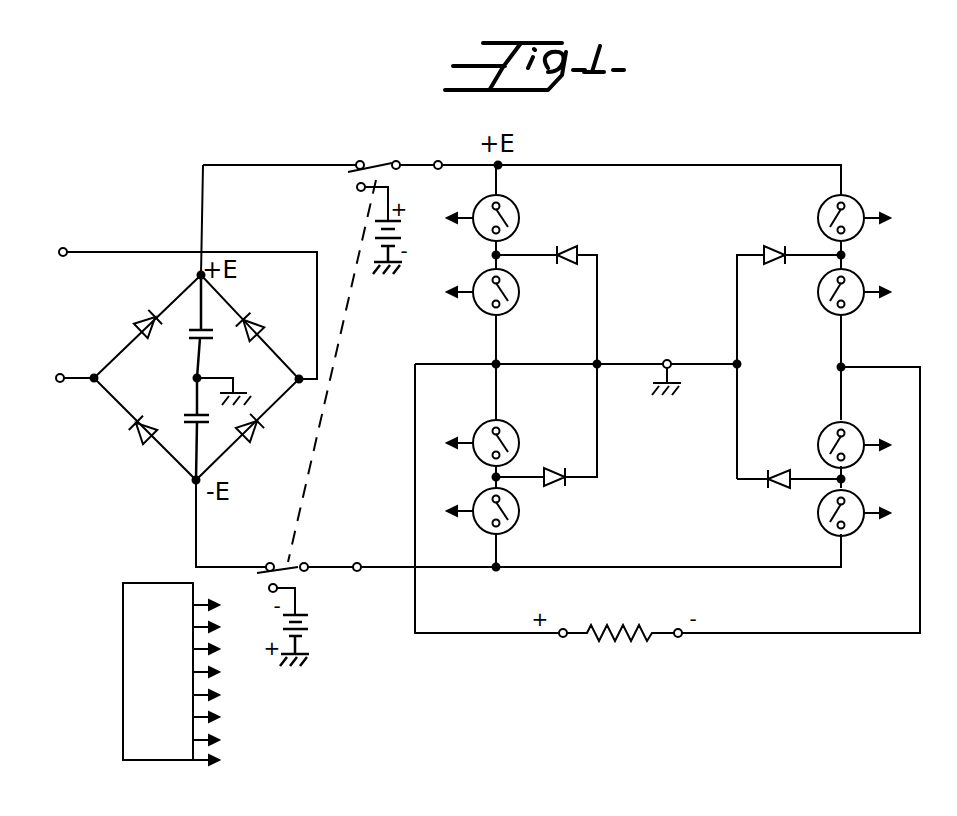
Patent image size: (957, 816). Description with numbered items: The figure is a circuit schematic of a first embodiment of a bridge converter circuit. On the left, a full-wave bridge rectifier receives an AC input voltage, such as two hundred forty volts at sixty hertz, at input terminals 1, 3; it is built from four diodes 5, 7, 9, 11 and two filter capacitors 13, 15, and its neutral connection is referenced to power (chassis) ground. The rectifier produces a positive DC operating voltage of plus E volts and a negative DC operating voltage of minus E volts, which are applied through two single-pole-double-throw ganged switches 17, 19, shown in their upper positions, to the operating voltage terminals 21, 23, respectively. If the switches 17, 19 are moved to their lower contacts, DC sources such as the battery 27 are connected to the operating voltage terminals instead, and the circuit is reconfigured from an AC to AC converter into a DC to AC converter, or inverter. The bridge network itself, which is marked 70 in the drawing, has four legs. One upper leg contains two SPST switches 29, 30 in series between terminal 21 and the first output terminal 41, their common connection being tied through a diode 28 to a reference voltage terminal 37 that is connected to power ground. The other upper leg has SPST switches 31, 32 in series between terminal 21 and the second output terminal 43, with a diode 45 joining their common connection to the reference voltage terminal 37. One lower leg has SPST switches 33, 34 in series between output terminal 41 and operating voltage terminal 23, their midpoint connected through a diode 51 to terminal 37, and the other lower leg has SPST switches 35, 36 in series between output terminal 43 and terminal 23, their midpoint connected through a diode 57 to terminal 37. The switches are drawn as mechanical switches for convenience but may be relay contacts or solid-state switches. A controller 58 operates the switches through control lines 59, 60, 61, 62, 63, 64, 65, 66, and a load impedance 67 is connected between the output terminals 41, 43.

The input terminal 1 is at (63, 247).
The input terminal 3 is at (57, 384).
The diode 5 is at (148, 315).
The diode 7 is at (245, 318).
The diode 9 is at (137, 427).
The diode 11 is at (263, 438).
The filter capacitor 13 is at (187, 342).
The filter capacitor 15 is at (187, 413).
The single-pole-double-throw ganged switch 17 is at (372, 158).
The single-pole-double-throw ganged switch 19 is at (296, 572).
The operating voltage terminal 21 is at (439, 155).
The operating voltage terminal 23 is at (357, 558).
The battery 27 is at (308, 636).
The diode 28 is at (559, 244).
The single-pole-single-throw switch 29 is at (521, 205).
The single-pole-single-throw switch 30 is at (520, 292).
The single-pole-single-throw switch 31 is at (864, 199).
The single-pole-single-throw switch 32 is at (865, 277).
The single-pole-single-throw switch 33 is at (506, 421).
The single-pole-single-throw switch 34 is at (514, 522).
The single-pole-single-throw switch 35 is at (856, 423).
The single-pole-single-throw switch 36 is at (813, 520).
The reference voltage terminal 37 is at (672, 359).
The output terminal 41 is at (561, 641).
The output terminal 43 is at (679, 641).
The diode 45 is at (790, 246).
The diode 51 is at (567, 480).
The diode 57 is at (766, 470).
The controller 58 is at (123, 666).
The control line 59 is at (333, 412).
The control line 60 is at (333, 460).
The control line 61 is at (559, 434).
The control line 62 is at (559, 483).
The control line 63 is at (333, 570).
The control line 64 is at (333, 615).
The control line 65 is at (555, 593).
The control line 66 is at (555, 637).
The load impedance 67 is at (617, 645).
The switching bridge circuit 70 is at (655, 313).